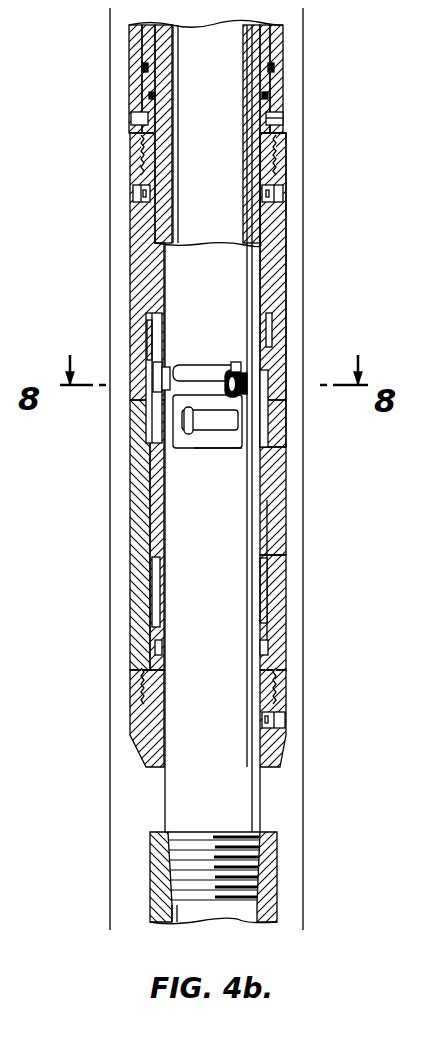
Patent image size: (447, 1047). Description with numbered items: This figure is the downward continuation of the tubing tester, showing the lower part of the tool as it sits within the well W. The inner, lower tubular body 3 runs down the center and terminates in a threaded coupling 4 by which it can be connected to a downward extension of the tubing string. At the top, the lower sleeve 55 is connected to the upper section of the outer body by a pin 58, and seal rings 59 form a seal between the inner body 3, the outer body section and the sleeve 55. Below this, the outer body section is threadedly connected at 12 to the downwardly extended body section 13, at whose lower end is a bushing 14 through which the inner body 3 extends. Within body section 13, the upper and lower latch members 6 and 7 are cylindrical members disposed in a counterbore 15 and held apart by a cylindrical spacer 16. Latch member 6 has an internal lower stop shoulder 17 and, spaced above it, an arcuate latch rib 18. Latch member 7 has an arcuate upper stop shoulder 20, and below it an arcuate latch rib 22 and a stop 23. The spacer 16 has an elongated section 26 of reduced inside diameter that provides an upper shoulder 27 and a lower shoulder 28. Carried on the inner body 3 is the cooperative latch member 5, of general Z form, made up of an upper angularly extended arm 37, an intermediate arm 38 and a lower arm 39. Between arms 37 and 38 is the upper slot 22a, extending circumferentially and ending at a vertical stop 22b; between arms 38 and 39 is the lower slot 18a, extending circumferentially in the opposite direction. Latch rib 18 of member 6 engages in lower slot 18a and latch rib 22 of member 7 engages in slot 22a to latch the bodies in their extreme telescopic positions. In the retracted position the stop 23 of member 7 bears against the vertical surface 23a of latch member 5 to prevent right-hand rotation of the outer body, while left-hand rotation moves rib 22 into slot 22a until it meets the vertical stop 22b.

The inner tubular body 3 is at (250, 24).
The threaded coupling 4 is at (275, 848).
The latch member 5 is at (210, 358).
The upper latch member 6 is at (286, 618).
The lower latch member 7 is at (262, 343).
The threaded connection 12 is at (274, 152).
The body section 13 is at (277, 245).
The bushing 14 is at (150, 749).
The counterbore 15 is at (272, 523).
The cylindrical spacer 16 is at (148, 444).
The lower stop shoulder 17 is at (260, 662).
The arcuate latch rib 18 is at (157, 629).
The lower slot 18a is at (203, 427).
The upper stop shoulder 20 is at (155, 366).
The arcuate latch rib 22 is at (160, 392).
The upper slot 22a is at (195, 376).
The vertical stop 22b is at (235, 368).
The stop 23 is at (268, 385).
The vertical surface 23a is at (268, 374).
The reduced-diameter section 26 is at (263, 487).
The upper shoulder 27 is at (263, 445).
The lower shoulder 28 is at (270, 563).
The upper arm 37 is at (158, 386).
The intermediate arm 38 is at (223, 410).
The lower arm 39 is at (223, 449).
The lower sleeve 55 is at (278, 39).
The pin 58 is at (278, 117).
The seal rings 59 is at (263, 97).
The well W is at (303, 191).